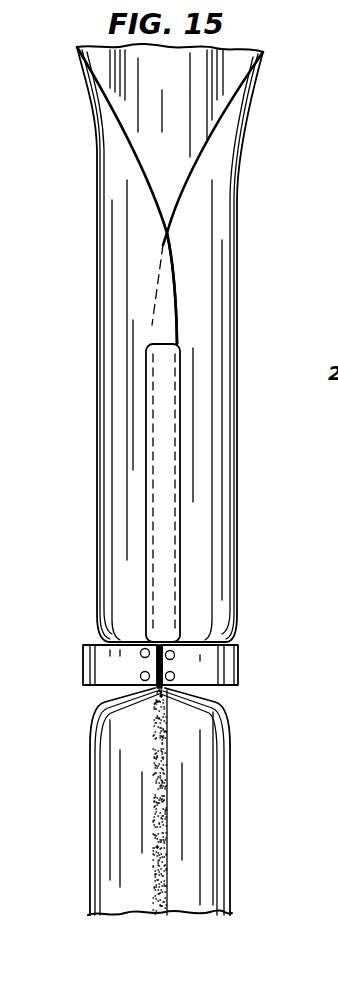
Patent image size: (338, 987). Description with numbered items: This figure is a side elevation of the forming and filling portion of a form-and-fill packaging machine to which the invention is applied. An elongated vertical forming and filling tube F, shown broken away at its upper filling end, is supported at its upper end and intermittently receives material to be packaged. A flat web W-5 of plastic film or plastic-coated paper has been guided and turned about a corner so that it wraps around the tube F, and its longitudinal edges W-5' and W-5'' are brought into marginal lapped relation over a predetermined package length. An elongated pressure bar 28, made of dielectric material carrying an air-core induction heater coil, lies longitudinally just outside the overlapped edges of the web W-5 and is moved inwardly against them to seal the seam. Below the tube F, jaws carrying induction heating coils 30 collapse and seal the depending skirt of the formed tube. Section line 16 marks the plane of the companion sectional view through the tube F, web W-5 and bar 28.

The forming and filling tube F is at (178, 84).
The flat web W-5 is at (201, 195).
The longitudinal edge of web W-5' is at (236, 288).
The longitudinal edge of web W-5'' is at (98, 304).
The section line 16- 16 is at (60, 278).
The pressure bar 28 is at (147, 485).
The induction heating coil 30 is at (140, 674).